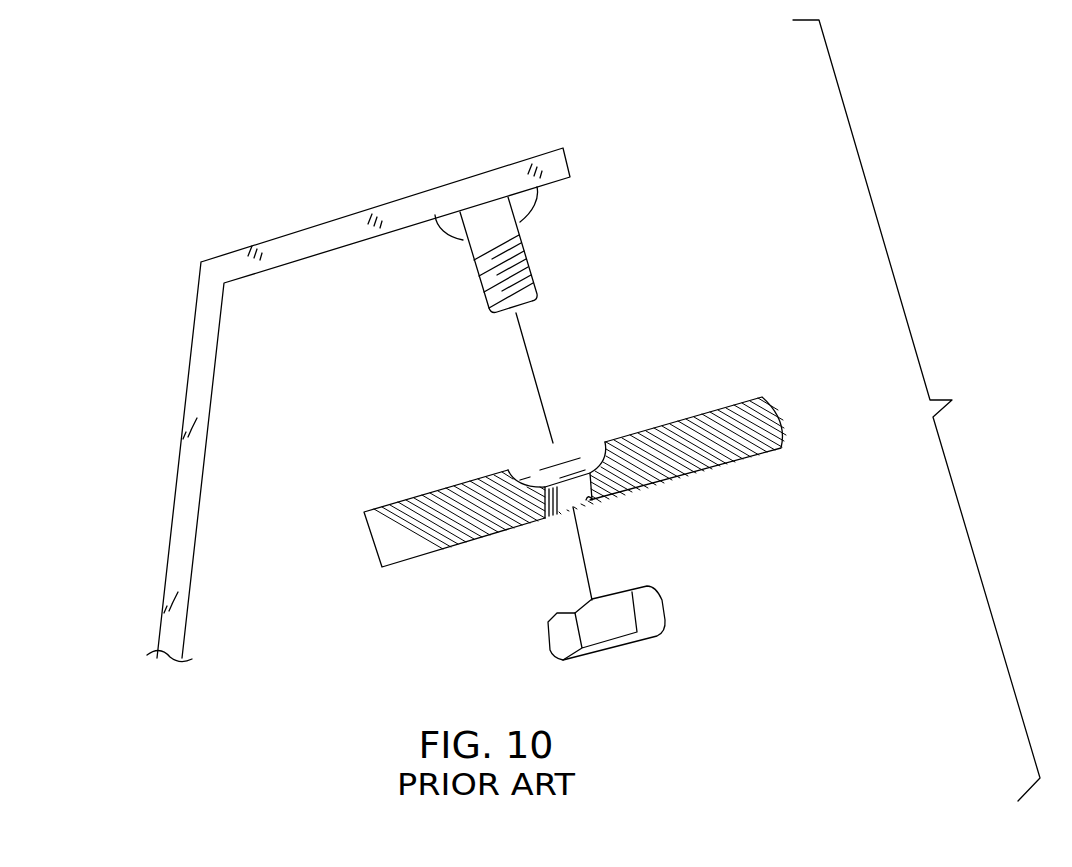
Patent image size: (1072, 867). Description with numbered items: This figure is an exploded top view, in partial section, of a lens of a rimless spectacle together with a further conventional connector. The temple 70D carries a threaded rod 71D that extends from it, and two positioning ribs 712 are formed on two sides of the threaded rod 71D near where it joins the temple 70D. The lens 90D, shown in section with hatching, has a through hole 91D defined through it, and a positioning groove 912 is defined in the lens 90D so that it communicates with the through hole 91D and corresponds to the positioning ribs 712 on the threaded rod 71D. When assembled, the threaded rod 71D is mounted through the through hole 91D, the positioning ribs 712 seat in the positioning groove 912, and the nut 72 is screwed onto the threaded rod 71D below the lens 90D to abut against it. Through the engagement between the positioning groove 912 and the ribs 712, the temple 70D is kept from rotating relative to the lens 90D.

The temple 70D is at (317, 197).
The positioning ribs 712 is at (523, 197).
The threaded rod 71D is at (527, 256).
The lens 90D is at (702, 402).
The positioning groove 912 is at (510, 468).
The through hole 91D is at (591, 502).
The nut 72 is at (652, 613).